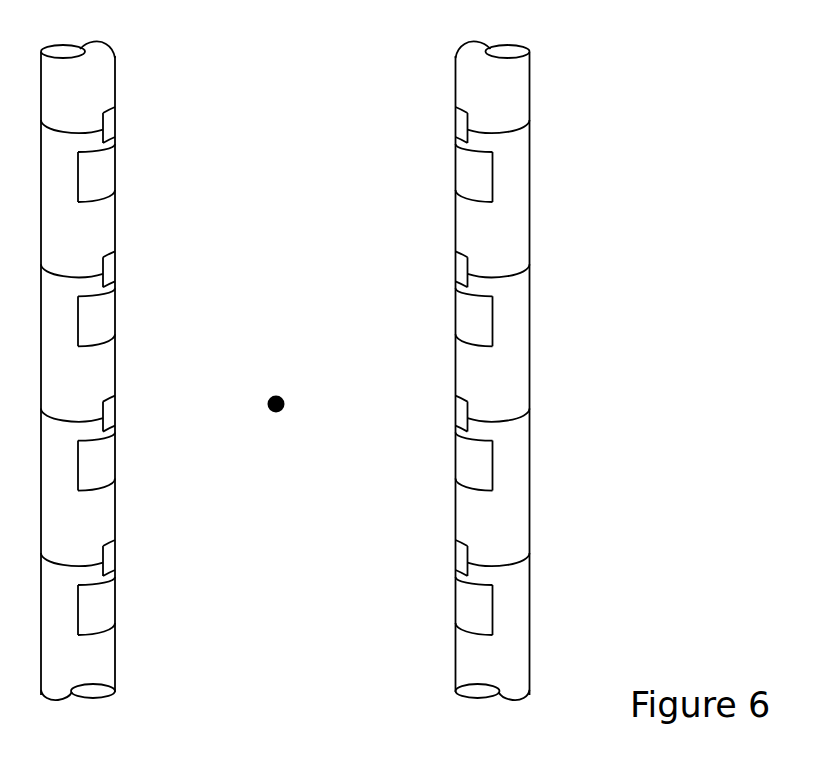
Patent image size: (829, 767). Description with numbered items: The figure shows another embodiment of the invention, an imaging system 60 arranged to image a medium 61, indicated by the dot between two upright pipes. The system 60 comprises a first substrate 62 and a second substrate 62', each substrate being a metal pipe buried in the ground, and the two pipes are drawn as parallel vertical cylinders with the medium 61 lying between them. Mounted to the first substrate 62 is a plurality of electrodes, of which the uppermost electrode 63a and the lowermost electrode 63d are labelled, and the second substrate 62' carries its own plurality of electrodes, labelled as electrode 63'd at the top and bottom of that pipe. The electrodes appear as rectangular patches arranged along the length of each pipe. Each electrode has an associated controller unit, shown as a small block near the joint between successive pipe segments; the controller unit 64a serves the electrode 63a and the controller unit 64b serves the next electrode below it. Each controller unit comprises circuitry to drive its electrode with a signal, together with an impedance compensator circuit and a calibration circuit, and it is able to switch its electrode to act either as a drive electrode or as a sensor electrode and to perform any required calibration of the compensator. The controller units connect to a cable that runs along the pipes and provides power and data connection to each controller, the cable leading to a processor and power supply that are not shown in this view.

The imaging system 60 is at (614, 145).
The medium 61 is at (274, 413).
The first substrate 62 is at (135, 370).
The second substrate 62' is at (440, 370).
The electrode 63a is at (101, 165).
The electrode 63d is at (100, 608).
The electrode 63'd is at (421, 409).
The controller unit 64a is at (105, 127).
The controller unit 64b is at (106, 266).